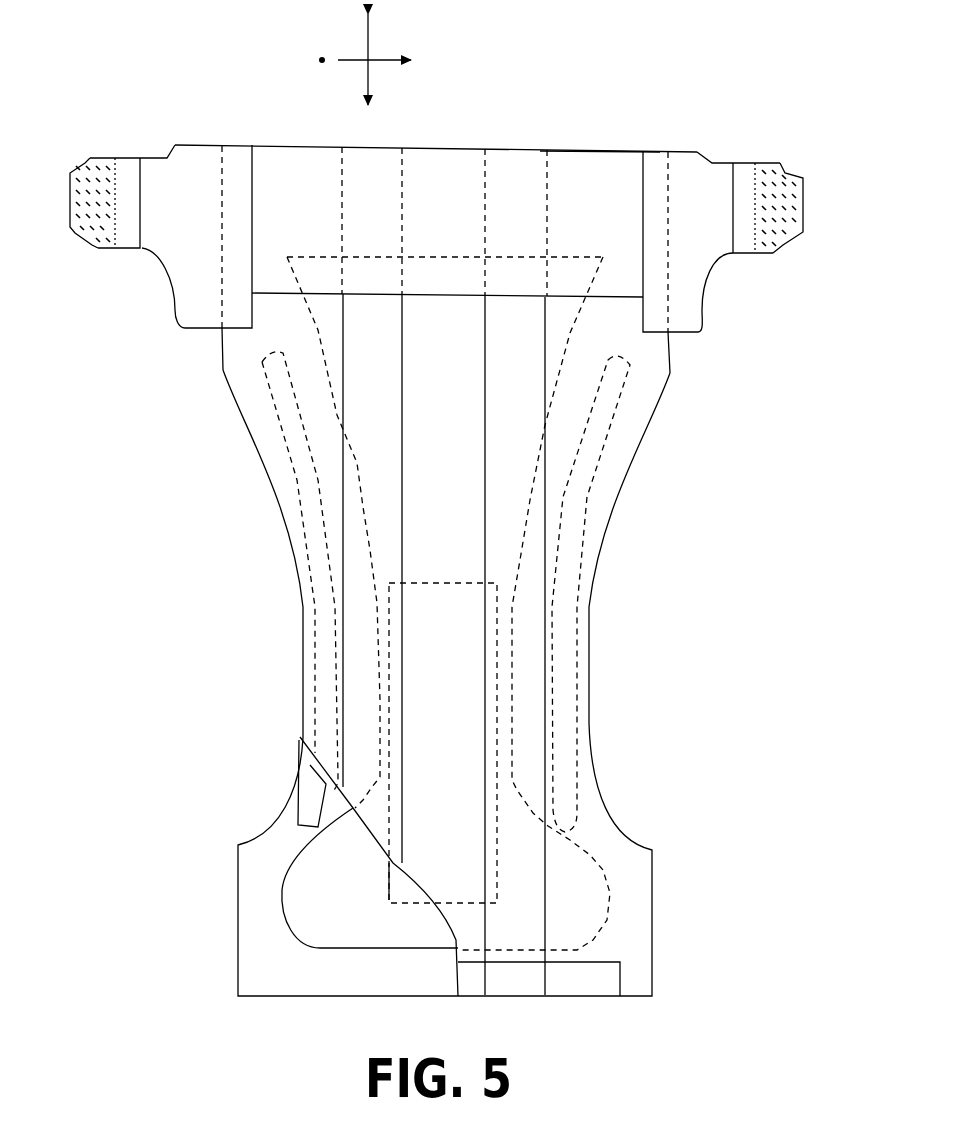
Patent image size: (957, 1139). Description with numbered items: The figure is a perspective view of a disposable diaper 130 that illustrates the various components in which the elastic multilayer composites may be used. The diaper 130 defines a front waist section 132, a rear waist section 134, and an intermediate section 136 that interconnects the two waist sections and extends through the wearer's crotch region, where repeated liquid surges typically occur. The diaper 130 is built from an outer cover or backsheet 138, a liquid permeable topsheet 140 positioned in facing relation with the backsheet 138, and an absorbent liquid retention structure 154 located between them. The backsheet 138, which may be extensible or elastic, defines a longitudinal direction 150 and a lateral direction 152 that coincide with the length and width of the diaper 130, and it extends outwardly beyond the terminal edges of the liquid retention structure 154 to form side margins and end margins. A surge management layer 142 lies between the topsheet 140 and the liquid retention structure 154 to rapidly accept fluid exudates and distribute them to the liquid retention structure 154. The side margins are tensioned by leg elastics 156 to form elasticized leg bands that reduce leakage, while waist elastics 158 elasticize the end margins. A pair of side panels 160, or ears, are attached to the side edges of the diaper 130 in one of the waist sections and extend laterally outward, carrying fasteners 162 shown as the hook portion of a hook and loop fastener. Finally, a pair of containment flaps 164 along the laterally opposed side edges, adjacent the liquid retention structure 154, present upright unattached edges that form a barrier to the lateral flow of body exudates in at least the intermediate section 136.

The disposable diaper 130 is at (700, 485).
The front waist section 132 is at (670, 838).
The rear waist section 134 is at (685, 356).
The intermediate section 136 is at (652, 628).
The backsheet 138 is at (248, 893).
The topsheet 140 is at (358, 815).
The surge management layer 142 is at (388, 897).
The longitudinal direction 150 is at (368, 32).
The lateral direction 152 is at (393, 63).
The liquid retention structure 154 is at (282, 912).
The leg elastics 156 is at (313, 793).
The waist elastics 158 is at (600, 157).
The side panels 160 is at (173, 320).
The fasteners 162 is at (93, 253).
The containment flaps 164 is at (333, 482).